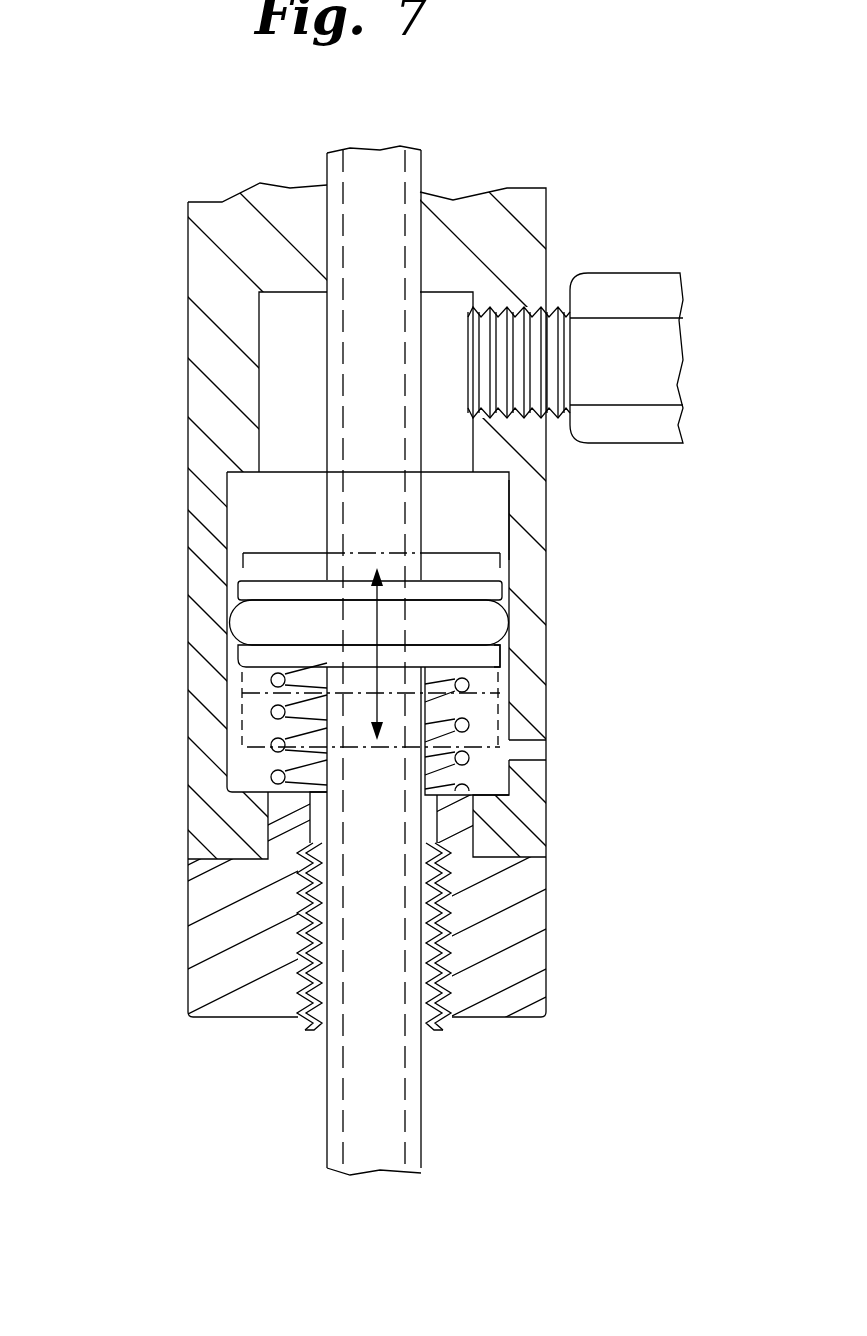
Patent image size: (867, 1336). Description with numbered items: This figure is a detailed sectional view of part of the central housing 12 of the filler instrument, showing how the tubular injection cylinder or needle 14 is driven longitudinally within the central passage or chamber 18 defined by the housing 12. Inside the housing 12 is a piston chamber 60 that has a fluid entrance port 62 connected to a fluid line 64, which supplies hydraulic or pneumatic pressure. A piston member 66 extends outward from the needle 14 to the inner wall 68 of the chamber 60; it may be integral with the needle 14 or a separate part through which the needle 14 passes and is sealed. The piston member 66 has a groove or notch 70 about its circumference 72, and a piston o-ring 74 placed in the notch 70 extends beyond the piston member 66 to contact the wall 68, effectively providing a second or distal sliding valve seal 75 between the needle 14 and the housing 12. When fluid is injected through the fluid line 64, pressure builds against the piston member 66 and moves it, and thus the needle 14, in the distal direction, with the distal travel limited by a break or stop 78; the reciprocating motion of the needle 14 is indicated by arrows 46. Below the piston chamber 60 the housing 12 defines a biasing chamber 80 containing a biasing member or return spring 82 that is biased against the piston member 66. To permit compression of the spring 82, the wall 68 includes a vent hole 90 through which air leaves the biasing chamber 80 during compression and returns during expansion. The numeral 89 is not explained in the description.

The central housing 12 is at (176, 519).
The tubular injection cylinder or needle 14 is at (356, 378).
The central passage or chamber 18 is at (274, 322).
The arrows 46 is at (430, 699).
The piston chamber 60 is at (247, 500).
The fluid entrance port 62 is at (462, 352).
The fluid line 64 is at (619, 303).
The piston member 66 is at (500, 588).
The inner wall 68 is at (496, 535).
The groove or notch 70 is at (255, 627).
The circumference 72 is at (257, 608).
The piston o-ring 74 is at (287, 610).
The second or distal sliding valve seal 75 is at (488, 657).
The break or stop 78 is at (263, 921).
The biasing chamber 80 is at (487, 775).
The biasing member or return spring 82 is at (242, 715).
The lower housing 89 is at (548, 1000).
The vent hole 90 is at (538, 752).